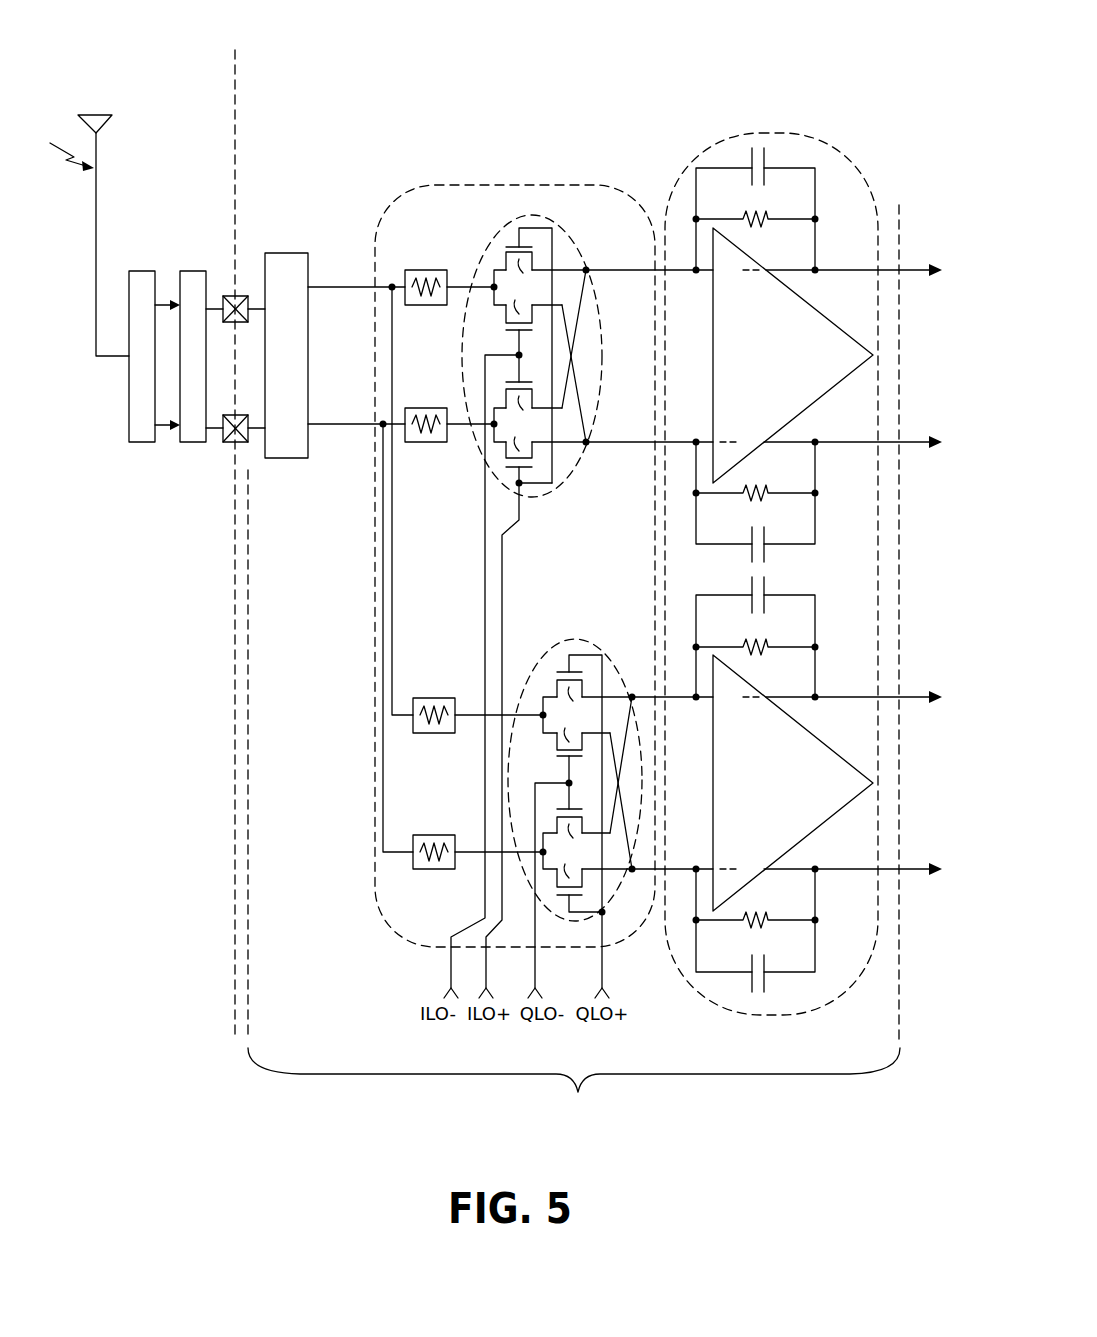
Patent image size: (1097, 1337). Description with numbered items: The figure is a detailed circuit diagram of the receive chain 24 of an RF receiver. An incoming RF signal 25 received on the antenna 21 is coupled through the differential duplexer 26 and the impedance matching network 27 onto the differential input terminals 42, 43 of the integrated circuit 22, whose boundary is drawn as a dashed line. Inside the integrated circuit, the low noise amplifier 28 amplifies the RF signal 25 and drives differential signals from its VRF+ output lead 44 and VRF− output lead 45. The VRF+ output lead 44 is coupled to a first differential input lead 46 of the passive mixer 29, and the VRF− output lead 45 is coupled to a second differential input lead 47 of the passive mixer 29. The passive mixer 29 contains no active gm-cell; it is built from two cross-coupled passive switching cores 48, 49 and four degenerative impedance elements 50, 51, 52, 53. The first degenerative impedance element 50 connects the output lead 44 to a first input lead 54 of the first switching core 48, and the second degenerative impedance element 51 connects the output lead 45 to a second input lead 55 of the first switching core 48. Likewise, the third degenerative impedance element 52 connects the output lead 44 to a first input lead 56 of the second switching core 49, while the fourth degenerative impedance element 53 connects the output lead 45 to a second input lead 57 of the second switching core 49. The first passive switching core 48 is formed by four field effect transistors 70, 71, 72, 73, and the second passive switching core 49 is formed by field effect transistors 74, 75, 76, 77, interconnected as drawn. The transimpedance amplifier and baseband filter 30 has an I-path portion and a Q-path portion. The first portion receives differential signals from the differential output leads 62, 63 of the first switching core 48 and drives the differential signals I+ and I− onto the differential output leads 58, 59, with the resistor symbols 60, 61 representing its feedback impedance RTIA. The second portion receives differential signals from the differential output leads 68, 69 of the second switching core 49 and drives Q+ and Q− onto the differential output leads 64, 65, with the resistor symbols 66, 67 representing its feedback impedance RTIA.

The antenna 21 is at (98, 150).
The integrated circuit 22 is at (248, 99).
The receive chain 24 is at (574, 1091).
The incoming RF signal 25 is at (72, 165).
The differential duplexer 26 is at (145, 271).
The impedance matching network 27 is at (188, 443).
The low noise amplifier 28 is at (275, 366).
The passive mixer 29 is at (467, 185).
The transimpedance amplifier and baseband filter 30 is at (746, 133).
The differential input terminal 42 is at (238, 296).
The differential input terminal 43 is at (238, 415).
The VRF+ output lead 44 is at (313, 289).
The VRF− output lead 45 is at (313, 427).
The first differential input lead 46 is at (377, 290).
The second differential input lead 47 is at (379, 421).
The first passive switching core 48 is at (560, 213).
The second passive switching core 49 is at (573, 639).
The first degenerative impedance element 50 is at (426, 305).
The second degenerative impedance element 51 is at (426, 442).
The third degenerative impedance element 52 is at (434, 733).
The fourth degenerative impedance element 53 is at (434, 869).
The first input lead 54 is at (492, 286).
The second input lead 55 is at (492, 423).
The first input lead 56 is at (541, 714).
The second input lead 57 is at (541, 851).
The differential output lead 58 is at (908, 273).
The differential output lead 59 is at (908, 445).
The resistor symbol 60 is at (757, 226).
The resistor symbol 61 is at (758, 486).
The differential output lead 62 is at (596, 267).
The differential output lead 63 is at (592, 439).
The differential output lead 64 is at (908, 700).
The differential output lead 65 is at (908, 872).
The resistor symbol 66 is at (757, 654).
The resistor symbol 67 is at (758, 913).
The differential output lead 68 is at (638, 694).
The differential output lead 69 is at (641, 866).
The field effect transistor 70 is at (523, 355).
The field effect transistor 71 is at (518, 632).
The field effect transistor 72 is at (513, 420).
The field effect transistor 73 is at (536, 629).
The field effect transistor 74 is at (572, 783).
The field effect transistor 75 is at (583, 846).
The field effect transistor 76 is at (562, 848).
The field effect transistor 77 is at (594, 842).